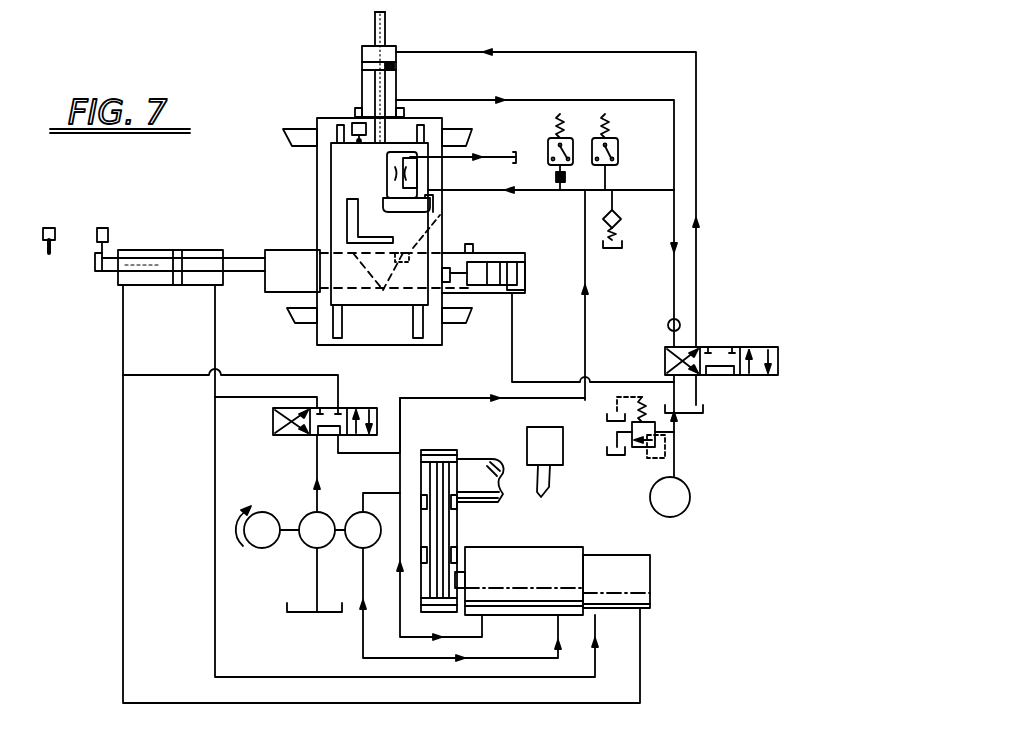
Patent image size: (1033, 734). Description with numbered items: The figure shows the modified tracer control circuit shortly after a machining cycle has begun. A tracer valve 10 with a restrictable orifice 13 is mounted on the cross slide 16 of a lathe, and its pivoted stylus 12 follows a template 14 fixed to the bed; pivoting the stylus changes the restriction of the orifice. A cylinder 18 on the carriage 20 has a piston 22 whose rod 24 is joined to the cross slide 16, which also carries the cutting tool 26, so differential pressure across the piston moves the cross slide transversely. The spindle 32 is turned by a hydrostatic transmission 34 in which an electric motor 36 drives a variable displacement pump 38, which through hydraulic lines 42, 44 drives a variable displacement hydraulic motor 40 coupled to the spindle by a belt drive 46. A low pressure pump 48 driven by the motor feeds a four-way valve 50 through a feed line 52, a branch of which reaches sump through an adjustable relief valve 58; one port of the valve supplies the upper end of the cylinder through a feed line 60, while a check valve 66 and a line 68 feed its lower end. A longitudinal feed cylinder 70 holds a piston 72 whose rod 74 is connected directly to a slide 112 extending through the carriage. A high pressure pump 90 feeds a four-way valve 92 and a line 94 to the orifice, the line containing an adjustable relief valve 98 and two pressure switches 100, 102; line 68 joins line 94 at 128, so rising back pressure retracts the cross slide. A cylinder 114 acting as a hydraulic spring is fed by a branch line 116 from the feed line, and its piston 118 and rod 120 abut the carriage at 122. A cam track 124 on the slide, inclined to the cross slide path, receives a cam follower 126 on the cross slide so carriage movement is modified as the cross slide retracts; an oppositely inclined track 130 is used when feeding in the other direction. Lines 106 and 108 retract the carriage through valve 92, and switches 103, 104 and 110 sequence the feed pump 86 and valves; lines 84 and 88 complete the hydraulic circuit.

The tracer valve 10 is at (378, 163).
The stylus 12 is at (406, 213).
The restrictable orifice 13 is at (418, 175).
The template 14 is at (353, 199).
The cross slide 16 is at (338, 165).
The cylinder 18 is at (362, 50).
The carriage 20 is at (324, 190).
The piston 22 is at (390, 66).
The rod 24 is at (386, 92).
The cutting tool 26 is at (563, 437).
The machine tool spindle 32 is at (479, 459).
The hydrostatic transmission 34 is at (530, 538).
The electric motor 36 is at (267, 512).
The variable displacement pump 38 is at (370, 512).
The variable displacement hydraulic motor 40 is at (571, 547).
The hydraulic line 42 is at (398, 593).
The hydraulic line 44 is at (362, 636).
The belt drive 46 is at (445, 532).
The low pressure pump 48 is at (690, 492).
The four-way valve 50 is at (768, 347).
The feed line 52 is at (673, 450).
The adjustable relief valve 58 is at (637, 448).
The feed line 60 is at (591, 52).
The check valve 66 is at (670, 318).
The line 68 is at (588, 100).
The longitudinal feed cylinder 70 is at (198, 250).
The piston 72 is at (177, 250).
The rod 74 is at (236, 258).
The return line 84 is at (250, 677).
The pump 86 is at (652, 575).
The return line 88 is at (124, 660).
The pump 90 is at (325, 512).
The four-way valve 92 is at (273, 426).
The line 94 is at (526, 190).
The adjustable relief valve 98 is at (622, 234).
The pressure switch 100 is at (548, 140).
The pressure switch 102 is at (620, 145).
The end-of-cycle switch 103 is at (55, 226).
The limit switch 104 is at (352, 123).
The line 106 is at (258, 375).
The line 108 is at (297, 397).
The limit switch 110 is at (112, 226).
The slide 112 is at (277, 250).
The cylinder 114 is at (492, 258).
The branch line 116 is at (514, 346).
The piston 118 is at (517, 270).
The rod 120 is at (488, 285).
The connection point 122 is at (450, 249).
The cam track 124 is at (388, 296).
The cam follower 126 is at (436, 230).
The connection point 128 is at (673, 190).
The oppositely inclined cam track 130 is at (345, 272).